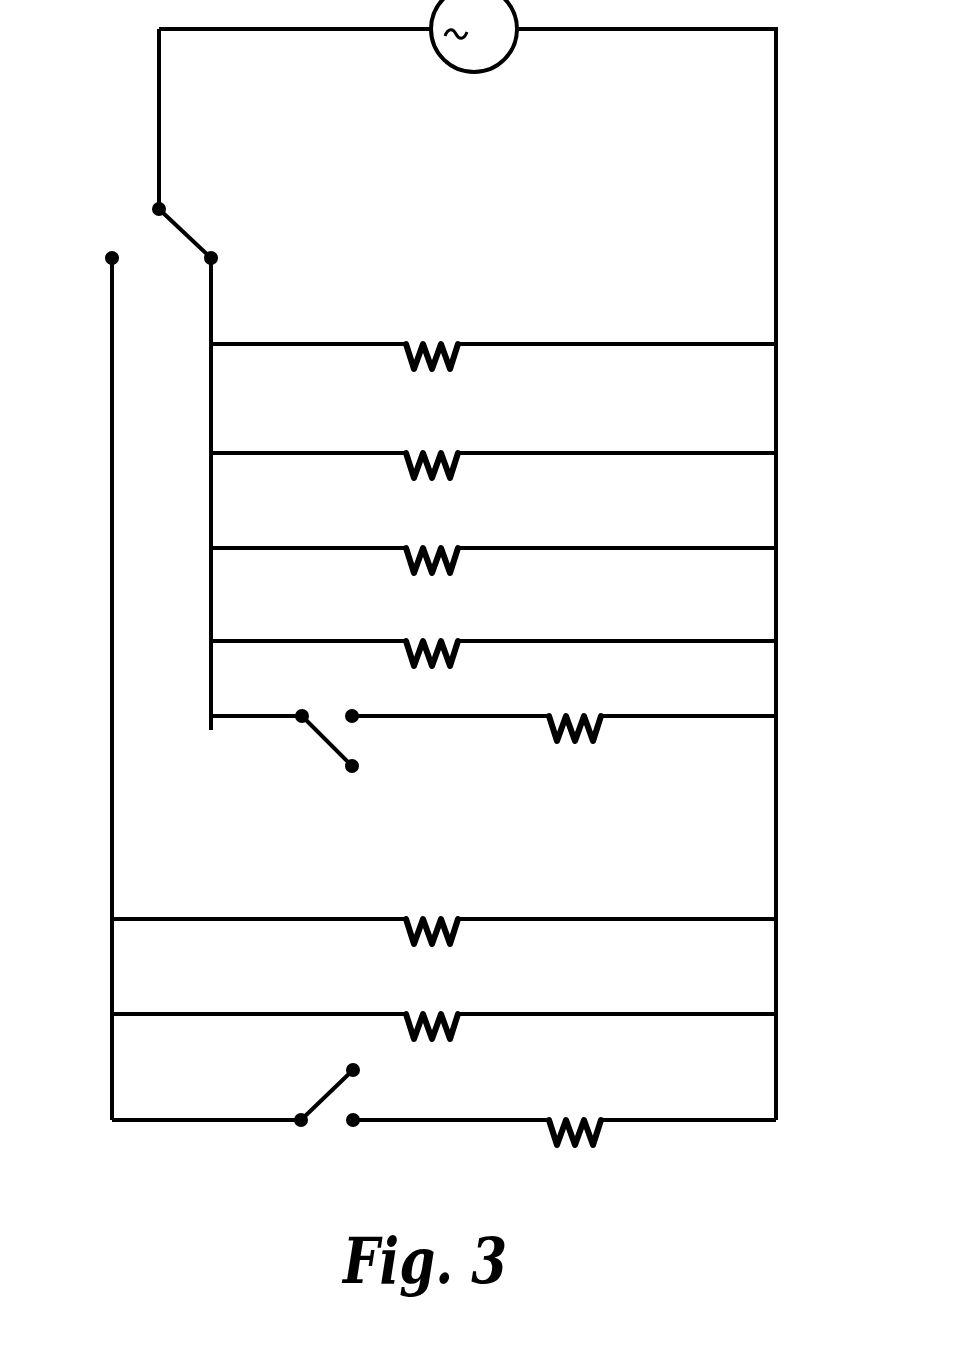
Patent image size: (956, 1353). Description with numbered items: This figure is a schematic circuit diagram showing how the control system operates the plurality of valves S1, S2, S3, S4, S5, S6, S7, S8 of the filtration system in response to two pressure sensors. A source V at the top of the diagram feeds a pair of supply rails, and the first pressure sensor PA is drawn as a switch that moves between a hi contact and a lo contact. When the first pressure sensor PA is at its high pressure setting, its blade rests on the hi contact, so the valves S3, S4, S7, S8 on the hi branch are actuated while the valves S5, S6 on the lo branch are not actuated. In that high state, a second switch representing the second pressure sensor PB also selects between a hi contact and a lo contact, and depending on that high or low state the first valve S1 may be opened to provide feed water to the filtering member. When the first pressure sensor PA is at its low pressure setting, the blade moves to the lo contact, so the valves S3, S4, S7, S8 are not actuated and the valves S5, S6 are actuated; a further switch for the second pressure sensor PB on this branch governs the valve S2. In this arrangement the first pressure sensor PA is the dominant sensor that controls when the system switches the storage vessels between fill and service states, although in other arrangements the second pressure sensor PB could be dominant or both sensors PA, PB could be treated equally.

The AC voltage source V is at (474, 36).
The first pressure sensor PA is at (153, 204).
The second pressure sensor PB is at (232, 944).
The high contact hi is at (288, 649).
The low contact lo is at (219, 702).
The first valve S1 is at (564, 704).
The valve S2 is at (564, 1108).
The valve S3 is at (494, 332).
The valve S4 is at (494, 441).
The valve S5 is at (444, 907).
The valve S6 is at (444, 1002).
The valve S7 is at (494, 536).
The valve S8 is at (494, 629).